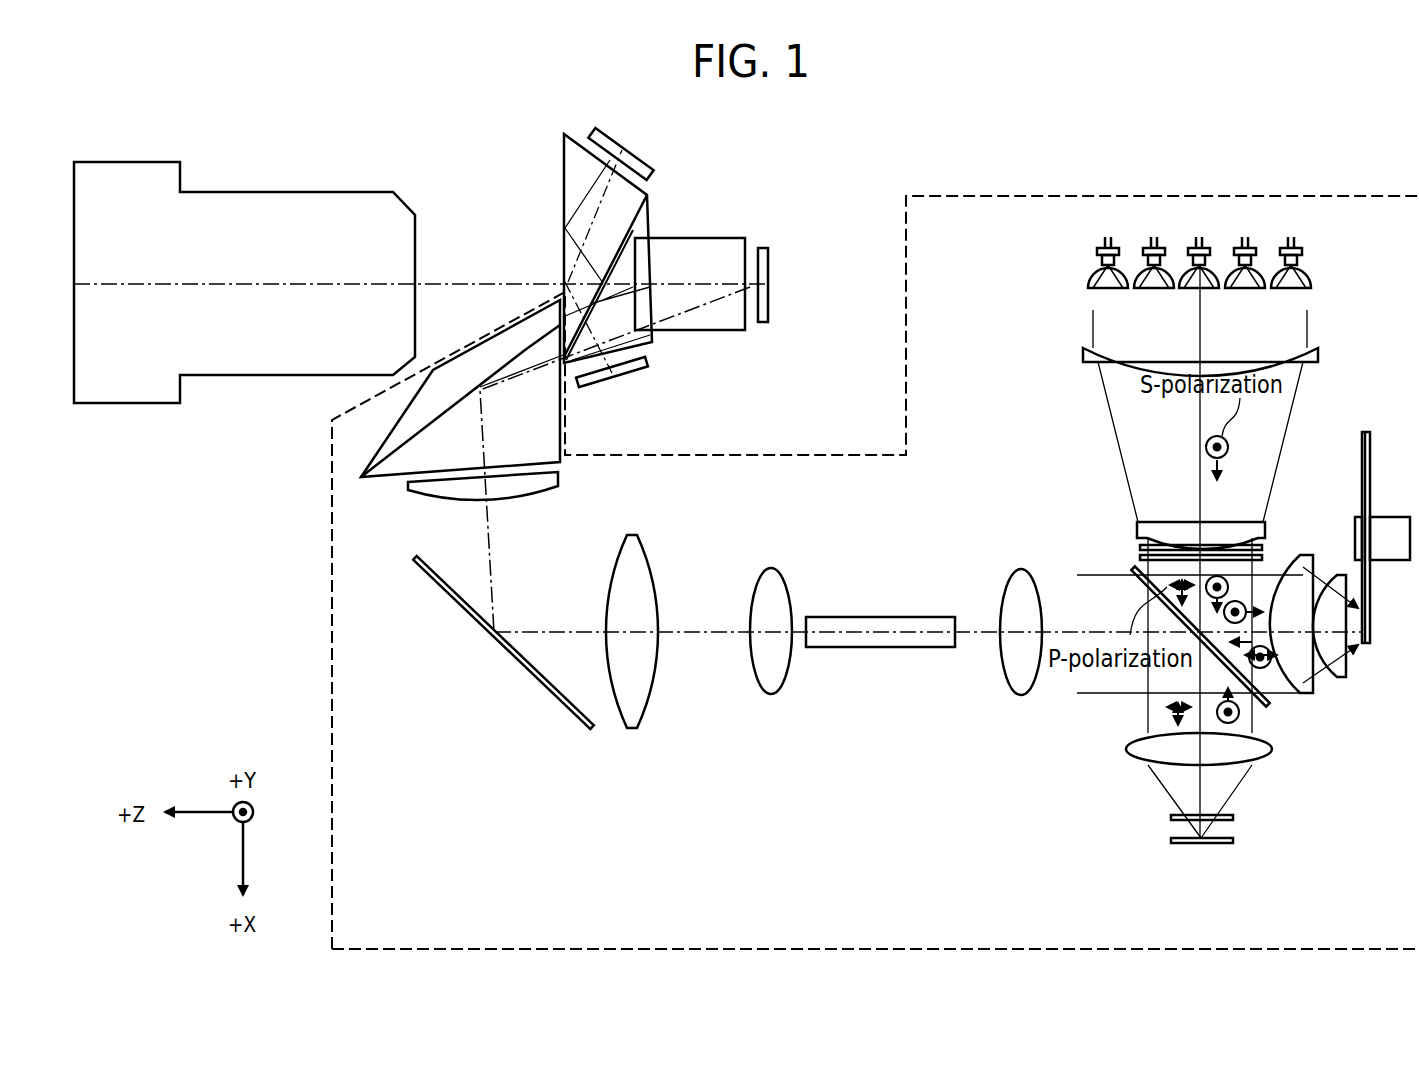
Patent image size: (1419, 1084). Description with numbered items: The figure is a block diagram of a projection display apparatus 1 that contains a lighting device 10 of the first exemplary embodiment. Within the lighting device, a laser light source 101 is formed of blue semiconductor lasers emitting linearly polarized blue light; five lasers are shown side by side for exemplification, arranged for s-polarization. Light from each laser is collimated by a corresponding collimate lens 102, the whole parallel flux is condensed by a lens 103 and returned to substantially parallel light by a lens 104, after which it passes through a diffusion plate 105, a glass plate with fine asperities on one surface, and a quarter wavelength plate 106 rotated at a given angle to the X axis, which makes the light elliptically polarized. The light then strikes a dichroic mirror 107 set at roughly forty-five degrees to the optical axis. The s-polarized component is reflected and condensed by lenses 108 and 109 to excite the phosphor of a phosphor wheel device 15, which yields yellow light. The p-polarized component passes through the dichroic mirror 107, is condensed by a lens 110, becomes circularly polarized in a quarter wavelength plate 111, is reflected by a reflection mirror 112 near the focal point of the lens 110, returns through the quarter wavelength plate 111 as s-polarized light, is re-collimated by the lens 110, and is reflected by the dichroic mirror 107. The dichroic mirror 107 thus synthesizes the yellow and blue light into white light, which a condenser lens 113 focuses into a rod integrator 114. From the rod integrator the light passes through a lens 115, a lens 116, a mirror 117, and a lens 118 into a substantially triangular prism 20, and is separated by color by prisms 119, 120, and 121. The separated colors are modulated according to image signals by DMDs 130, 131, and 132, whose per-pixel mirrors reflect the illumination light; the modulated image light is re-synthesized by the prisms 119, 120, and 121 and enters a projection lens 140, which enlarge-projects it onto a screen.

The projection display apparatus 1 is at (131, 128).
The lighting device 10 is at (1222, 196).
The phosphor wheel device 15 is at (1366, 430).
The prism 20 is at (400, 434).
The laser light source 101 is at (1097, 250).
The collimate lens 102 is at (1107, 297).
The lens 103 is at (1085, 352).
The lens 104 is at (1138, 522).
The diffusion plate 105 is at (1140, 547).
The quarter wavelength plate 106 is at (1140, 557).
The dichroic mirror 107 is at (1133, 568).
The lens 108 is at (1307, 695).
The lens 109 is at (1345, 680).
The lens 110 is at (1125, 748).
The quarter wavelength plate 111 is at (1171, 817).
The reflection mirror 112 is at (1195, 848).
The condenser lens 113 is at (1020, 572).
The rod integrator 114 is at (895, 617).
The lens 115 is at (772, 568).
The lens 116 is at (631, 728).
The mirror 117 is at (560, 700).
The lens 118 is at (558, 474).
The prism 119 is at (638, 217).
The prism 120 is at (638, 263).
The prism 121 is at (730, 317).
The DMD 130 is at (607, 133).
The DMD 131 is at (620, 373).
The DMD 132 is at (769, 265).
The projection lens 140 is at (257, 192).